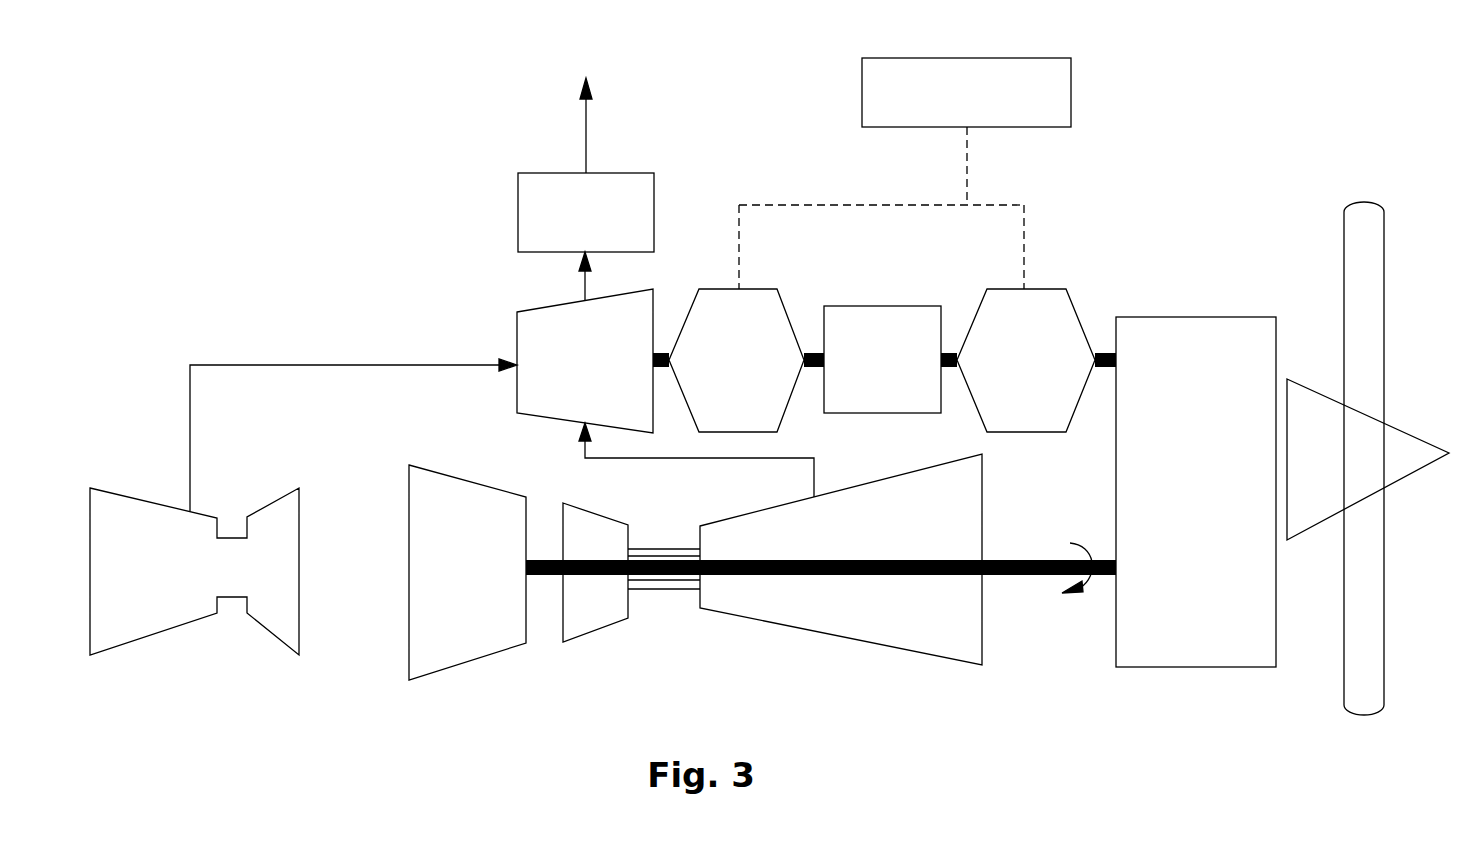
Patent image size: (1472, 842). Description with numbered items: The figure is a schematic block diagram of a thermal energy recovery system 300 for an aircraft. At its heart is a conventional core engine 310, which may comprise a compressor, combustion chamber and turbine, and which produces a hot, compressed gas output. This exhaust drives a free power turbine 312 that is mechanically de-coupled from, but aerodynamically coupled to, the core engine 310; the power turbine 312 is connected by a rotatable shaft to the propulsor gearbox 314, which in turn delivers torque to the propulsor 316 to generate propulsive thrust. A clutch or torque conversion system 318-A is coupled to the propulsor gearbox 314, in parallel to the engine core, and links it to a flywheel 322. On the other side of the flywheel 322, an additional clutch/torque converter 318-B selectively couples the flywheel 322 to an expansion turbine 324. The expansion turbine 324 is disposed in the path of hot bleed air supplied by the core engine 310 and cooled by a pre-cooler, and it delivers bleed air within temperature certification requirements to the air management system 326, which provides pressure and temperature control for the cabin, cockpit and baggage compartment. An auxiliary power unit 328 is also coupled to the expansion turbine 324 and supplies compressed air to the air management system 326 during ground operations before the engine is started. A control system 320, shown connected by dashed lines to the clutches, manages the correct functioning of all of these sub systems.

The thermal energy recovery system 300 is at (230, 104).
The core engine 310 is at (830, 635).
The power turbine 312 is at (463, 665).
The propulsor gearbox 314 is at (1186, 668).
The propulsor 316 is at (1410, 431).
The clutch or torque conversion system 318-A is at (1060, 290).
The clutch/torque converter 318-B is at (755, 288).
The control system 320 is at (1025, 58).
The flywheel 322 is at (883, 305).
The expansion turbine 324 is at (537, 307).
The air management system 326 is at (618, 172).
The auxiliary power unit 328 is at (148, 637).